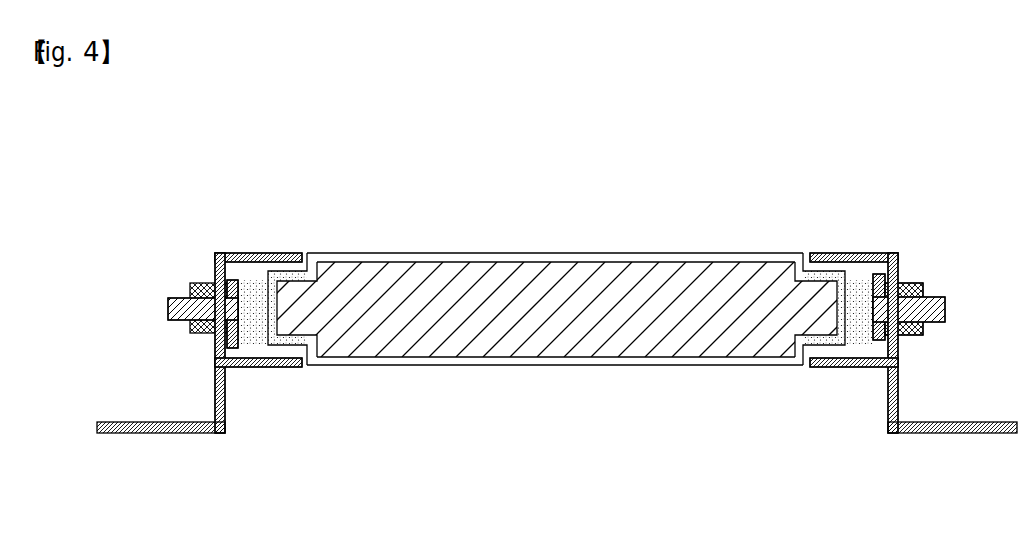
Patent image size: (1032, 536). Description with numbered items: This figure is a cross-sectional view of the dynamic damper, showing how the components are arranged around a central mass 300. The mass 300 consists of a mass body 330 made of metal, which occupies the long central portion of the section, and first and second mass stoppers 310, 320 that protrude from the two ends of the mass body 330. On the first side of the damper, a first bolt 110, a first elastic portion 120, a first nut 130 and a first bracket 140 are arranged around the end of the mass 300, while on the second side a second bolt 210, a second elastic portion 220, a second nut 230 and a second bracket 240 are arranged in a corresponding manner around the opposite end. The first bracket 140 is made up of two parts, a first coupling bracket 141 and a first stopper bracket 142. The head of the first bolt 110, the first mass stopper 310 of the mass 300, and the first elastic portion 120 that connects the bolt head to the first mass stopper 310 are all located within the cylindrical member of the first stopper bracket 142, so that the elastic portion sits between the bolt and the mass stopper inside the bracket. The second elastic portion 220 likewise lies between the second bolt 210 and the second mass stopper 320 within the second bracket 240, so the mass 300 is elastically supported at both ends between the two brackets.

The first bolt 110 is at (168, 297).
The first elastic portion 120 is at (270, 366).
The first nut 130 is at (196, 282).
The first bracket 140 is at (262, 254).
The first coupling bracket 141 is at (133, 433).
The first stopper bracket 142 is at (242, 368).
The second bolt 210 is at (943, 296).
The second elastic portion 220 is at (862, 366).
The second nut 230 is at (903, 282).
The second bracket 240 is at (837, 254).
The mass 300 is at (557, 310).
The first mass stopper 310 is at (323, 366).
The second mass stopper 320 is at (812, 313).
The mass body 330 is at (553, 328).